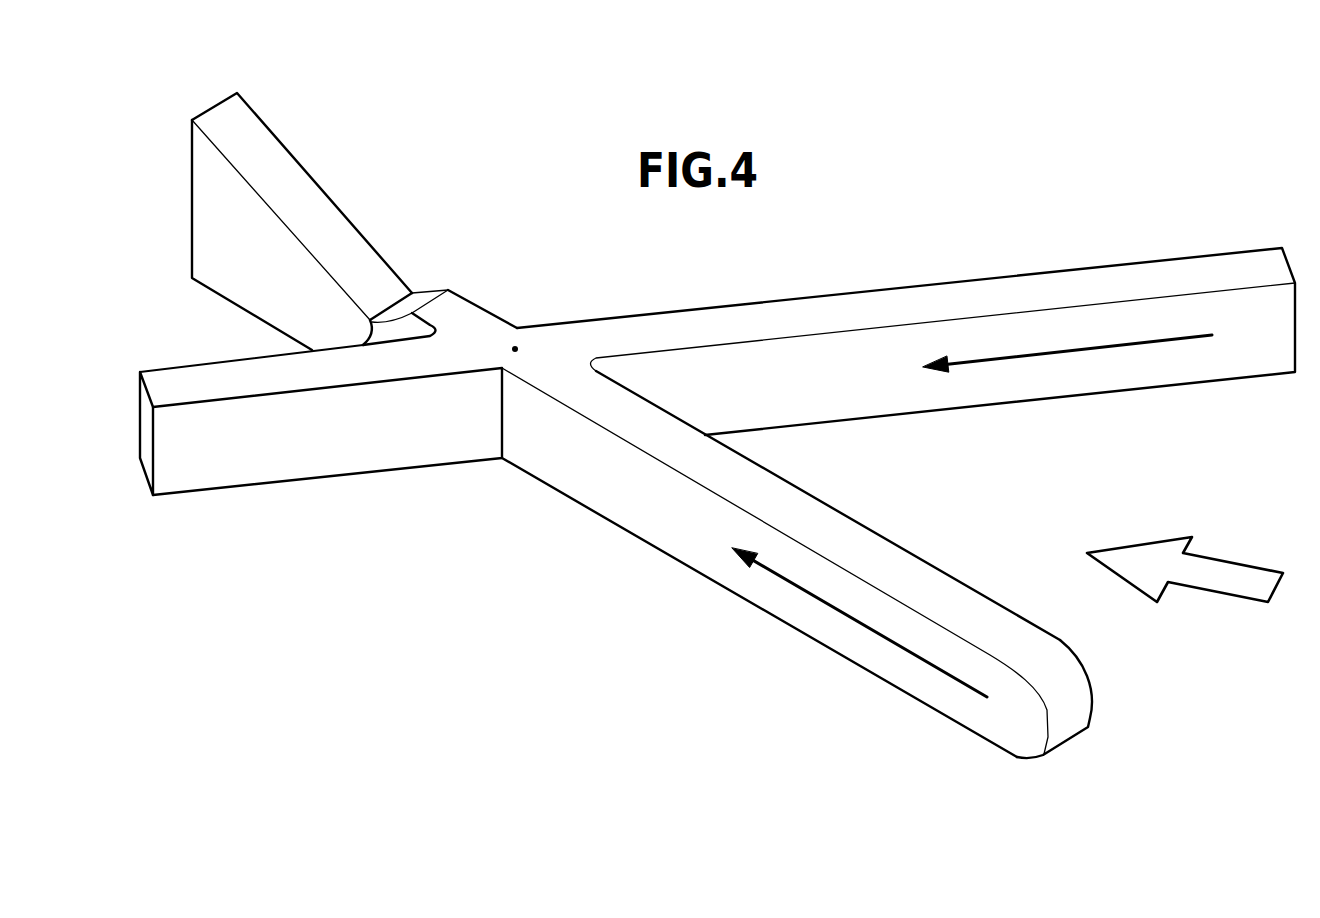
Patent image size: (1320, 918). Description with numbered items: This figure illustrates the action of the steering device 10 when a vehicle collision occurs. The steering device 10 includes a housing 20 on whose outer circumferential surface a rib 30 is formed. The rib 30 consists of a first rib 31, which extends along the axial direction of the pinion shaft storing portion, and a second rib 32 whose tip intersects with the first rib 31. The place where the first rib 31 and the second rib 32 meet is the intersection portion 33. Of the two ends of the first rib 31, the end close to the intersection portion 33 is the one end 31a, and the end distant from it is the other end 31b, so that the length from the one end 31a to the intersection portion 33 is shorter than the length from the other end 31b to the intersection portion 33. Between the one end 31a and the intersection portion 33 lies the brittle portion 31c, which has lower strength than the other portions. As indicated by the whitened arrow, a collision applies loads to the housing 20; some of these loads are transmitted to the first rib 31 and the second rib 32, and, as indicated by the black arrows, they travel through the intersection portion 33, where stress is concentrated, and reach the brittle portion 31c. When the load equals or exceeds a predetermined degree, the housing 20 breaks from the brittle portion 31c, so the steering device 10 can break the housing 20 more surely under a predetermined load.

The steering device 10 is at (717, 424).
The housing 20 is at (1000, 147).
The rib 30 is at (930, 428).
The first rib 31 is at (798, 511).
The second rib 32 is at (848, 316).
The intersection portion 33 is at (517, 328).
The one end 31a is at (208, 110).
The other end 31b is at (1073, 721).
The brittle portion 31c is at (393, 298).